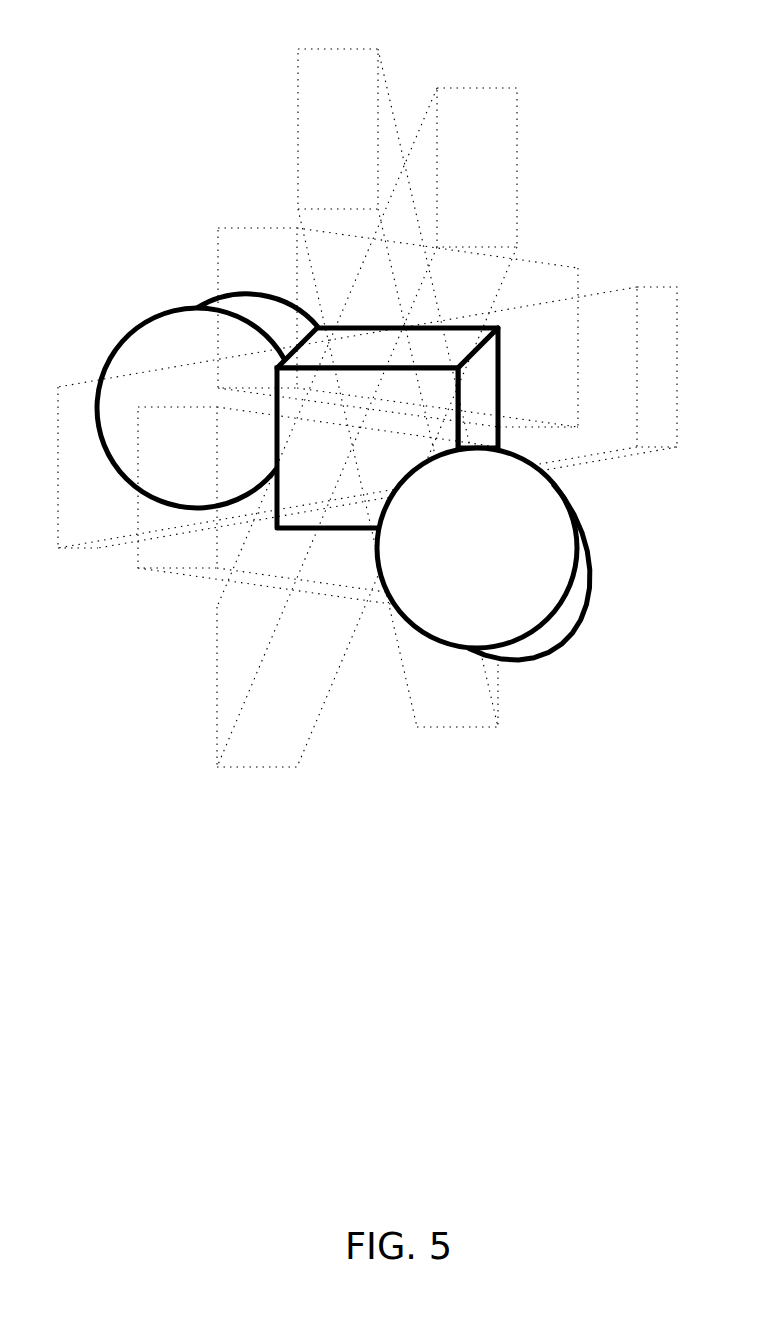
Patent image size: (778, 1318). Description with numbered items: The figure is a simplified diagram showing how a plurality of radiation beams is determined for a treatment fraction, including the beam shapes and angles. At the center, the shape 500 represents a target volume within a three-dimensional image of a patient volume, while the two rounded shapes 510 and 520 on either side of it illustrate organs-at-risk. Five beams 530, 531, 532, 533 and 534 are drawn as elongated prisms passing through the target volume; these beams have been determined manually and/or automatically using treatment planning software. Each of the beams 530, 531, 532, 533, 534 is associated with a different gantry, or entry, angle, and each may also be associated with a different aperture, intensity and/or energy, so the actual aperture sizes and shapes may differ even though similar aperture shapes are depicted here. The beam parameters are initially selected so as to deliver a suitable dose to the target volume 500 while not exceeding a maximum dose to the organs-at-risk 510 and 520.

The target volume shape 500 is at (342, 334).
The organ-at-risk shape 510 is at (148, 318).
The organ-at-risk shape 520 is at (557, 627).
The radiation beam 530 is at (337, 48).
The radiation beam 531 is at (477, 88).
The radiation beam 532 is at (247, 228).
The radiation beam 533 is at (617, 291).
The radiation beam 534 is at (187, 573).